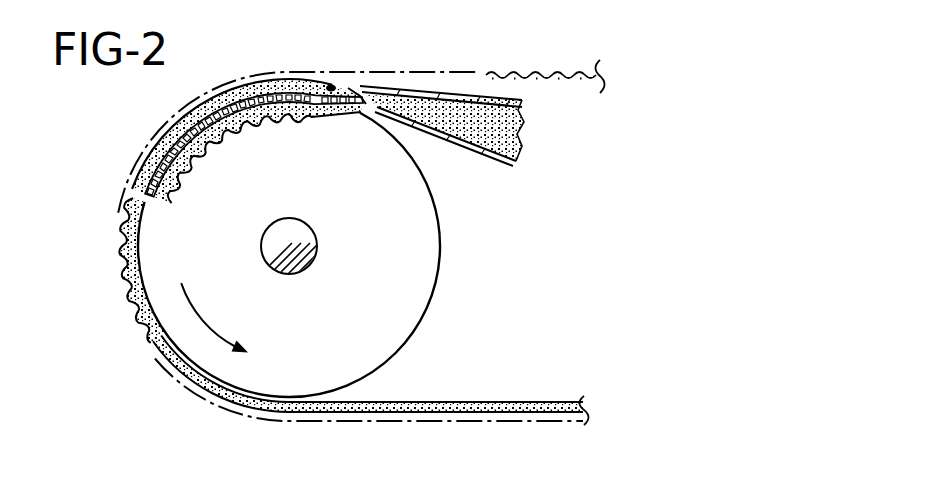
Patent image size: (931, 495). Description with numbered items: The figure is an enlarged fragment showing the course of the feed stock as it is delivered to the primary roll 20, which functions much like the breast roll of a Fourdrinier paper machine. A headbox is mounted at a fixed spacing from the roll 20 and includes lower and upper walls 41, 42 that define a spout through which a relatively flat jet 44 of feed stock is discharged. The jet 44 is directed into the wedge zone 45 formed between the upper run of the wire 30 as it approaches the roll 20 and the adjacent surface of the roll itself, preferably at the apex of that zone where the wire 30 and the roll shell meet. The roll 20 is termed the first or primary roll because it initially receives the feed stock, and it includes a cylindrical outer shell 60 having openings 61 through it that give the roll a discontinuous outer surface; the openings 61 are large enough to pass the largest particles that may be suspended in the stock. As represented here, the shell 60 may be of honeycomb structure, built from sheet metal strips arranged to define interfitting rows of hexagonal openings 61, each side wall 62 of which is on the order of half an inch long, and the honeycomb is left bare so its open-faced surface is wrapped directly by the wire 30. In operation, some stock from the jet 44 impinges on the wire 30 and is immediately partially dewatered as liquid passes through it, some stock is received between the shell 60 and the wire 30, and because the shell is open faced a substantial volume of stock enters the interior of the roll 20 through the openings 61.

The roll 20 is at (126, 230).
The wire 30 is at (548, 73).
The lower wall 41 is at (483, 157).
The upper wall 42 is at (475, 95).
The flat jet 44 is at (353, 90).
The wedge zone 45 is at (330, 88).
The cylindrical outer shell 60 is at (140, 166).
The openings 61 is at (240, 120).
The side wall 62 is at (168, 138).